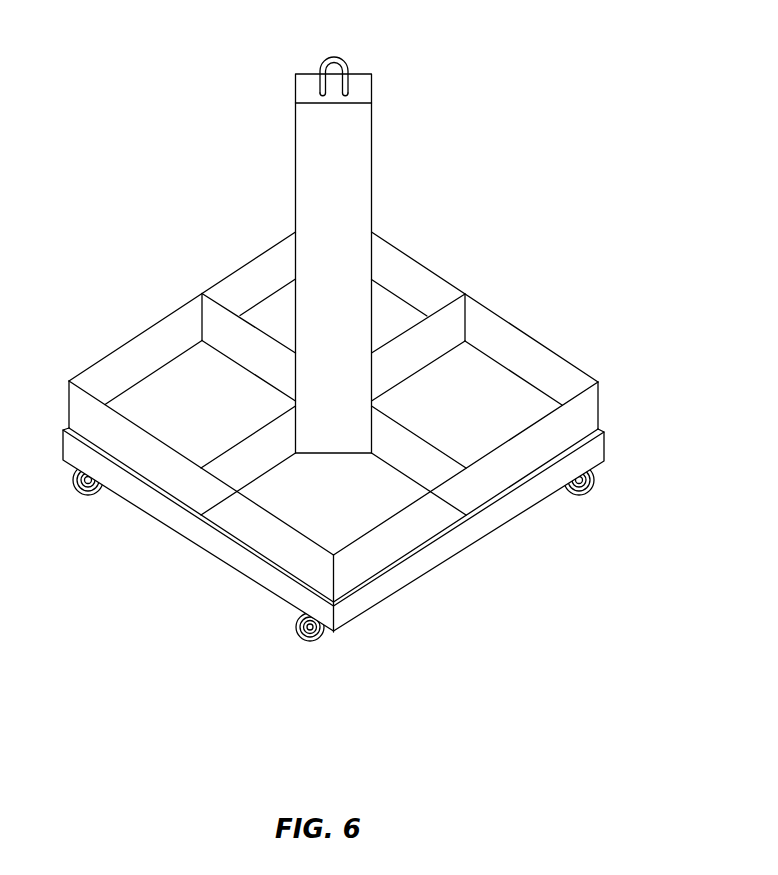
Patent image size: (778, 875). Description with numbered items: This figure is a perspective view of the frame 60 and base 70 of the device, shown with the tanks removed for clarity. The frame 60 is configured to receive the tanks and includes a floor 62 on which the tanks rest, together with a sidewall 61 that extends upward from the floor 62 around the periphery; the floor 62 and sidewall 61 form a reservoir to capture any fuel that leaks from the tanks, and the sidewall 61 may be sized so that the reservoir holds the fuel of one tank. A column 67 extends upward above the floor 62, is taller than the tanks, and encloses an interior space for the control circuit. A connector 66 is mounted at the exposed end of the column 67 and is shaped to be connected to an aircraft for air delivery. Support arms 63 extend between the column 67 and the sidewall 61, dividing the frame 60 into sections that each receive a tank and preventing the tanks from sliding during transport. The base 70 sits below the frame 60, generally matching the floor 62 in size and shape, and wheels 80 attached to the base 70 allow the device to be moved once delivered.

The frame 60 is at (146, 121).
The sidewall 61 is at (420, 262).
The floor 62 is at (320, 503).
The support arms 63 is at (245, 337).
The connector 66 is at (342, 58).
The column 67 is at (348, 165).
The base 70 is at (260, 572).
The wheels 80 is at (300, 637).